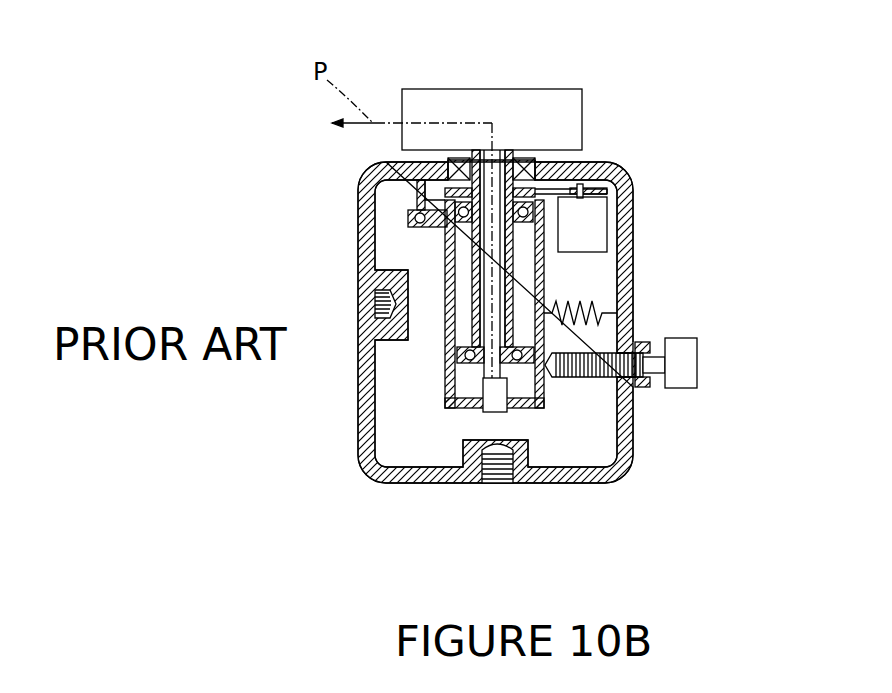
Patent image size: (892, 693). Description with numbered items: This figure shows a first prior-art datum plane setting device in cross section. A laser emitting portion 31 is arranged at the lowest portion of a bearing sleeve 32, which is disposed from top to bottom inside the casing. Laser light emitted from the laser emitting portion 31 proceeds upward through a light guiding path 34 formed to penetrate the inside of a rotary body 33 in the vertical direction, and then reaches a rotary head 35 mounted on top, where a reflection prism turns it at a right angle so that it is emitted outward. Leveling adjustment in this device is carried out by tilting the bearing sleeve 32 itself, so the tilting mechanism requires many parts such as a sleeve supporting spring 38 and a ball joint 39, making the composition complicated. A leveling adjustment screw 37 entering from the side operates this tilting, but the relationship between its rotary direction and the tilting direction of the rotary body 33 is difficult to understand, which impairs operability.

The laser emitting portion 31 is at (502, 405).
The bearing sleeve 32 is at (450, 348).
The rotary body 33 is at (517, 277).
The light guiding path 34 is at (487, 240).
The rotary head 35 is at (556, 127).
The leveling adjustment screw 37 is at (683, 362).
The sleeve supporting spring 38 is at (588, 305).
The ball joint 39 is at (416, 212).